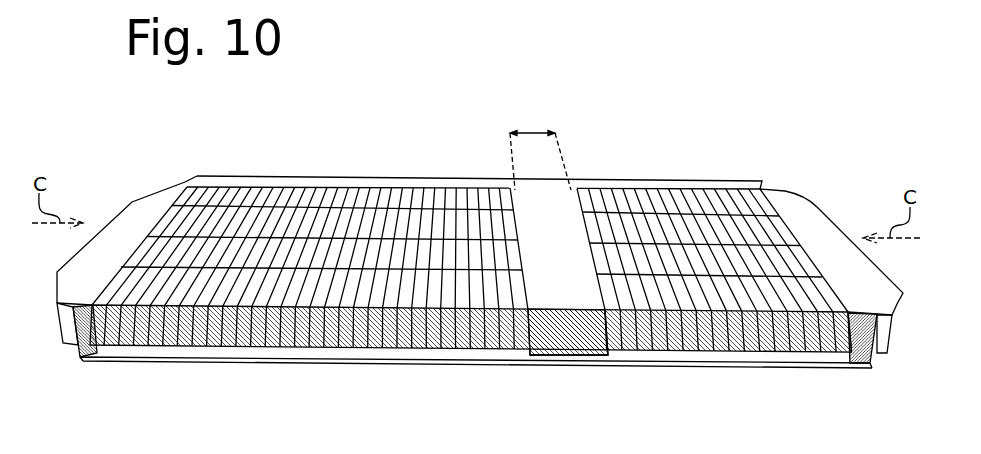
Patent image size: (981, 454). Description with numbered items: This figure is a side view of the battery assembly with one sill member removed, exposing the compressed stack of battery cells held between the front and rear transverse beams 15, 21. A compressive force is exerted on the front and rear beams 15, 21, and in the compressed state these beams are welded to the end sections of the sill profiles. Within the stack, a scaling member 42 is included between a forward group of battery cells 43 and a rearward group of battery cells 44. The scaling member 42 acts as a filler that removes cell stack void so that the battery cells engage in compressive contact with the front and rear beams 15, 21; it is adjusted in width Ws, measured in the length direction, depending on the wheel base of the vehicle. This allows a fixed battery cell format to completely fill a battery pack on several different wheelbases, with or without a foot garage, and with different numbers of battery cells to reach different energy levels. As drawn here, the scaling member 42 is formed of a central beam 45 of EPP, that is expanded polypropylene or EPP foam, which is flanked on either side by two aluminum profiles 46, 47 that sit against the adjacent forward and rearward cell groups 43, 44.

The front transverse beam 15 is at (143, 203).
The rear transverse beam 21 is at (812, 212).
The scaling member 42 is at (566, 300).
The forward group of battery cells 43 is at (333, 248).
The rearward group of battery cells 44 is at (695, 250).
The central beam 45 is at (575, 248).
The aluminum profile 46 is at (513, 190).
The aluminum profile 47 is at (573, 193).
The width of the scaling member Ws is at (530, 133).